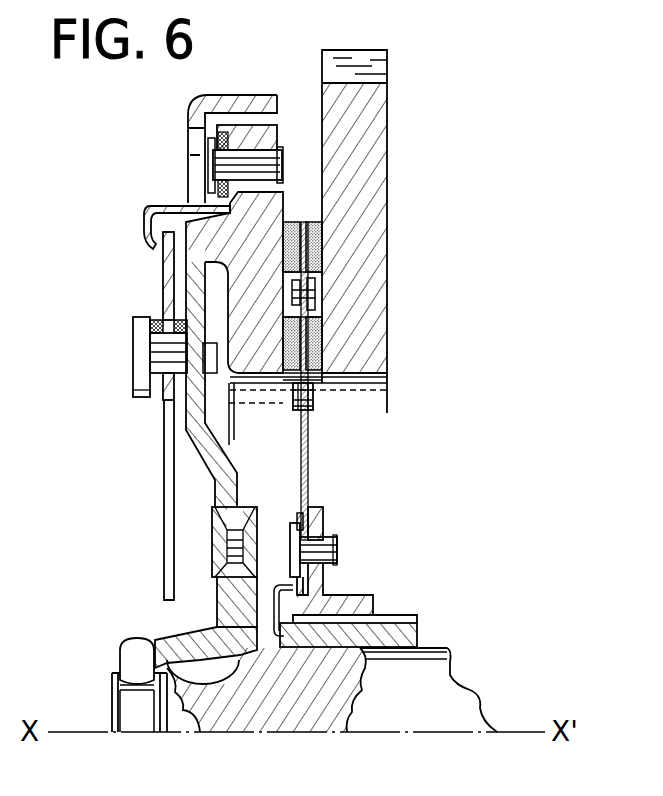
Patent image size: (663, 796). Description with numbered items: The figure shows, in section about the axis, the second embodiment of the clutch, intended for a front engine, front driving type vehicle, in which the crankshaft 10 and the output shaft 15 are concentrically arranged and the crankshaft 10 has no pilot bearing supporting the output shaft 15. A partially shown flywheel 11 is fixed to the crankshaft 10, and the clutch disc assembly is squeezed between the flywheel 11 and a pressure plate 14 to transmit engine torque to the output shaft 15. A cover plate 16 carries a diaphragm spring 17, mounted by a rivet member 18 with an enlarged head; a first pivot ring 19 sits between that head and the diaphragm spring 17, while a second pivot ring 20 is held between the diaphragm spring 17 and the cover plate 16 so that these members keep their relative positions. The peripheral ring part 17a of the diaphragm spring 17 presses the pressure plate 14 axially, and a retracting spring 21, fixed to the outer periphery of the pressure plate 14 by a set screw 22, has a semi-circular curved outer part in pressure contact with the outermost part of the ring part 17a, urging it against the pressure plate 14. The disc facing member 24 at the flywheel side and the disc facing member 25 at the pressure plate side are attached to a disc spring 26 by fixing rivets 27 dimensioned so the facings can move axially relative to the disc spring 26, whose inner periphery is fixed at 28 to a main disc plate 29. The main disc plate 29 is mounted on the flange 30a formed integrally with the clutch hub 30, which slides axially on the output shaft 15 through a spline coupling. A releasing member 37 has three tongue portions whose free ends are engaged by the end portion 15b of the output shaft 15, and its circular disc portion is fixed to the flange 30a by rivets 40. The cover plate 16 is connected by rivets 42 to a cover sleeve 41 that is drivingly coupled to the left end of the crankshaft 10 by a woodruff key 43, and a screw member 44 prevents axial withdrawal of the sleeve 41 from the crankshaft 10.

The crankshaft 10 is at (430, 702).
The flywheel 11 is at (338, 190).
The pressure plate 14 is at (234, 234).
The output shaft 15 is at (420, 640).
The end portion of the output shaft 15b is at (266, 690).
The cover plate 16 is at (225, 470).
The diaphragm spring 17 is at (162, 430).
The peripheral ring part of the diaphragm spring 17a is at (163, 268).
The rivet member 18 is at (138, 375).
The first pivot ring 19 is at (158, 320).
The second pivot ring 20 is at (204, 318).
The retracting spring 21 is at (165, 205).
The set screw 22 is at (258, 160).
The disc facing member 24 is at (315, 222).
The disc facing member 25 is at (286, 226).
The disc spring 26 is at (318, 342).
The fixing rivet 27 is at (318, 298).
The attachment of disc spring to main disc plate 28 is at (314, 412).
The main disc plate 29 is at (310, 455).
The clutch hub 30 is at (373, 600).
The flange of the clutch hub 30a is at (323, 507).
The releasing member 37 is at (262, 640).
The rivet 40 is at (337, 550).
The cover sleeve 41 is at (170, 638).
The rivet 42 is at (255, 545).
The woodruff key 43 is at (240, 668).
The screw member 44 is at (137, 730).